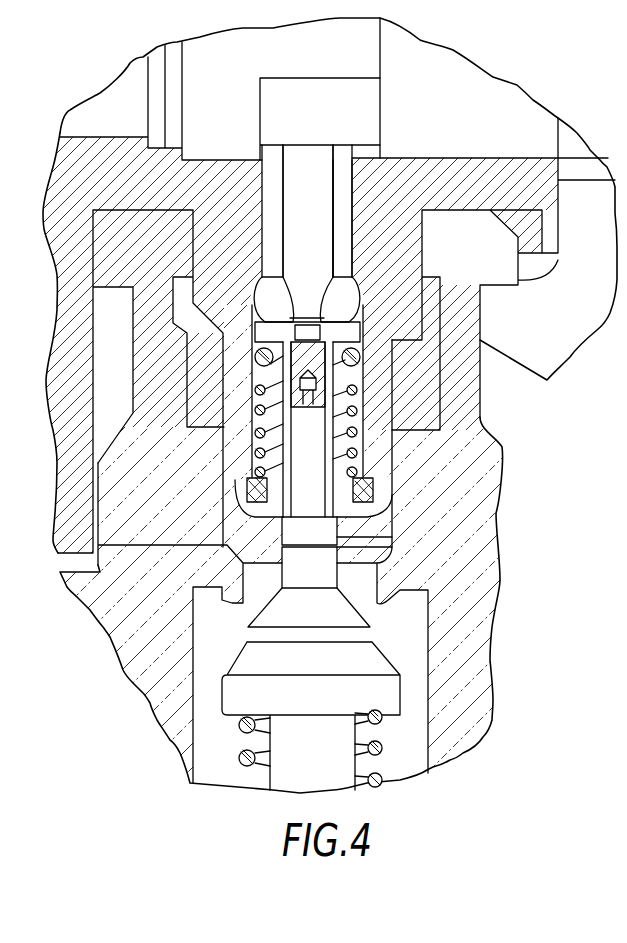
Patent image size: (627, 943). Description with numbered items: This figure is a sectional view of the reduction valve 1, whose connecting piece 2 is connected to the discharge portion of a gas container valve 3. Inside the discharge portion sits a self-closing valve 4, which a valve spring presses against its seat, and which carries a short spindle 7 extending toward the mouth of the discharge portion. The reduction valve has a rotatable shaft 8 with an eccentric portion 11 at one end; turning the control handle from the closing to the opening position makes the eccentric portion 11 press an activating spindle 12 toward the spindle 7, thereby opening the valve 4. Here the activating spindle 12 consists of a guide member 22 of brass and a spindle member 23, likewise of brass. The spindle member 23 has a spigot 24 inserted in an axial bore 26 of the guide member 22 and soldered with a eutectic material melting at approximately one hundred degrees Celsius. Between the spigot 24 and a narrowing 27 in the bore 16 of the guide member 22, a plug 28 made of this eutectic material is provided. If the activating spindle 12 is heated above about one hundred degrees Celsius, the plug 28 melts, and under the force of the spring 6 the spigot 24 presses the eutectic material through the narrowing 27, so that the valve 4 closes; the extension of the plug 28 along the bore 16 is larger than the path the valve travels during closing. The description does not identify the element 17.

The reduction valve 1 is at (90, 152).
The connecting piece 2 is at (240, 272).
The gas container valve 3 is at (483, 553).
The self-closing valve 4 is at (353, 660).
The spring 6 is at (383, 745).
The short spindle 7 is at (297, 584).
The rotatable shaft 8 is at (455, 112).
The eccentric portion 11 is at (320, 97).
The activating spindle 12 is at (262, 209).
The bore 16 is at (318, 245).
The ball head 17 is at (345, 300).
The guide member 22 is at (345, 203).
The spindle member 23 is at (330, 534).
The spigot 24 is at (335, 462).
The axial bore 26 is at (300, 442).
The narrowing 27 is at (352, 323).
The plug 28 is at (312, 375).